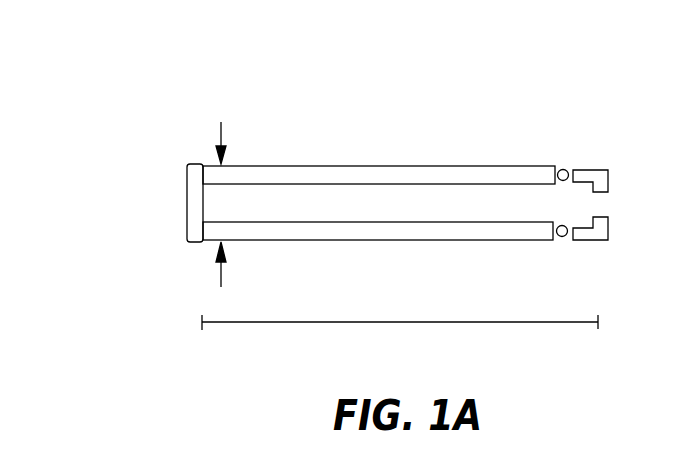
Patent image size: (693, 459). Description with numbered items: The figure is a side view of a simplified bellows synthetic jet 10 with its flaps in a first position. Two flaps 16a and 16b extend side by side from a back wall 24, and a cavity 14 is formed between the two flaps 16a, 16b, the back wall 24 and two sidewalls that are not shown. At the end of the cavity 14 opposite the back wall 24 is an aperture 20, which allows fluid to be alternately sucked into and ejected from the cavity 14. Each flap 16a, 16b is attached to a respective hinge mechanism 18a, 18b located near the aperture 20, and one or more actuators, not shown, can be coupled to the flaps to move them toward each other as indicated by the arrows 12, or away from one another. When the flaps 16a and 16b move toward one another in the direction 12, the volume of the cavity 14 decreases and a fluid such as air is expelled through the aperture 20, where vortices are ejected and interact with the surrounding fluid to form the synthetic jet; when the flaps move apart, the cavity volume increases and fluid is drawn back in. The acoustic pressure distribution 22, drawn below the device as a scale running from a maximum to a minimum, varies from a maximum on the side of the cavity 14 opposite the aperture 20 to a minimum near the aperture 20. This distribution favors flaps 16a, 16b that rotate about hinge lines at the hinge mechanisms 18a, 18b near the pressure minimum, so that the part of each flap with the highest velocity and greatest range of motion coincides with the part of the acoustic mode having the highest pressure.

The bellows synthetic jet 10 is at (215, 66).
The motion of flaps toward each other 12 is at (222, 138).
The cavity 14 is at (425, 210).
The flap 16a is at (413, 166).
The flap 16b is at (412, 241).
The hinge mechanism 18a is at (563, 169).
The hinge mechanism 18b is at (565, 237).
The aperture 20 is at (605, 205).
The acoustic pressure distribution 22 is at (382, 322).
The back wall 24 is at (187, 204).